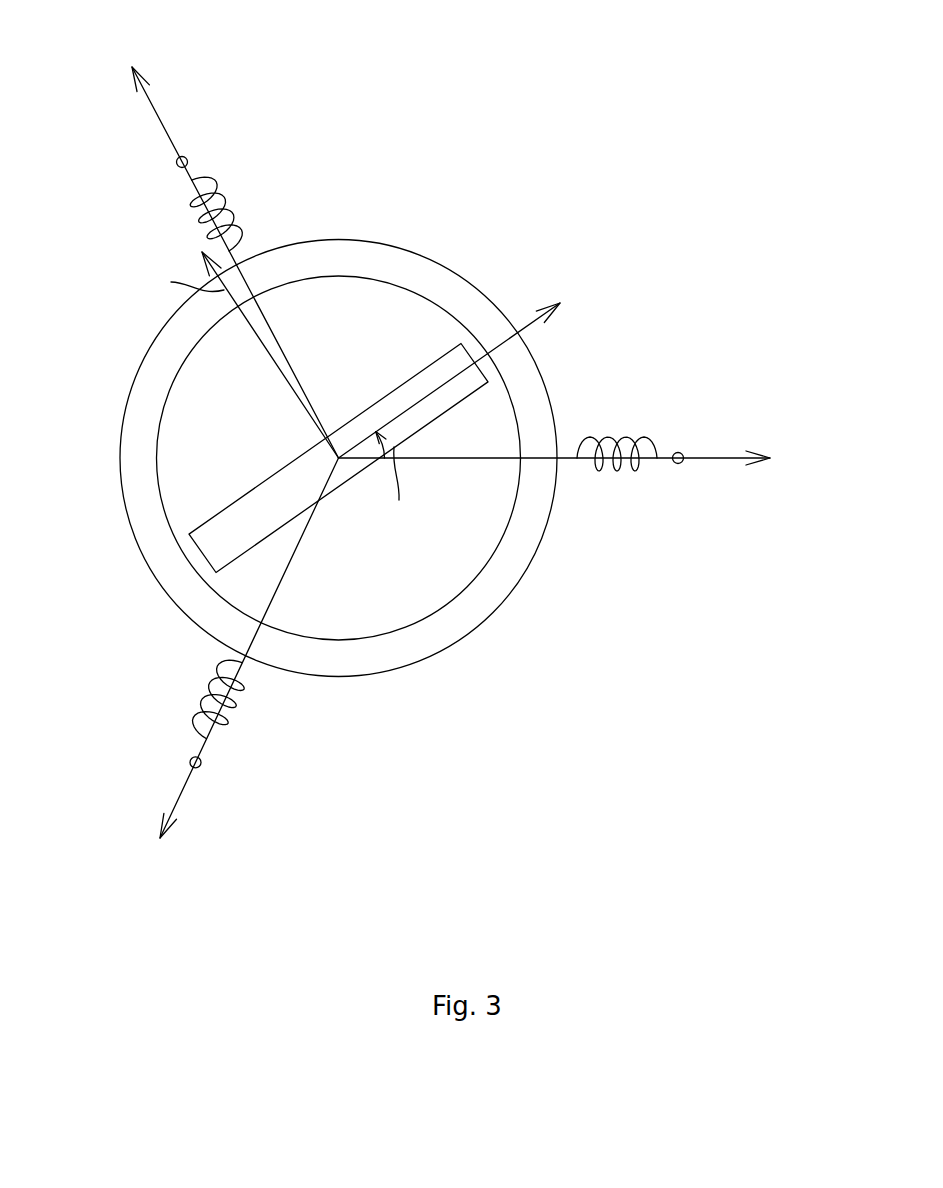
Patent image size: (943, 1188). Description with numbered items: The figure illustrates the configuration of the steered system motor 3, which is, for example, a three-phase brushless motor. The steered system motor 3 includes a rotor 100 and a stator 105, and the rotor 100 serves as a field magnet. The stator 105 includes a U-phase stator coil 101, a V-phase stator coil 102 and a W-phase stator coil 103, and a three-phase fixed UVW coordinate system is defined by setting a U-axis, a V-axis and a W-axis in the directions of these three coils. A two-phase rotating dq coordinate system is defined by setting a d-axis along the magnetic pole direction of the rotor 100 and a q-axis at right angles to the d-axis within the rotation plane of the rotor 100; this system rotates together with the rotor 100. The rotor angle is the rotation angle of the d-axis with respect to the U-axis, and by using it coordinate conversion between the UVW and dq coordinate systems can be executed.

The steered system motor 3 is at (478, 145).
The rotor 100 is at (253, 508).
The U-phase stator coil 101 is at (605, 438).
The V-phase stator coil 102 is at (220, 192).
The W-phase stator coil 103 is at (217, 695).
The stator 105 is at (513, 563).